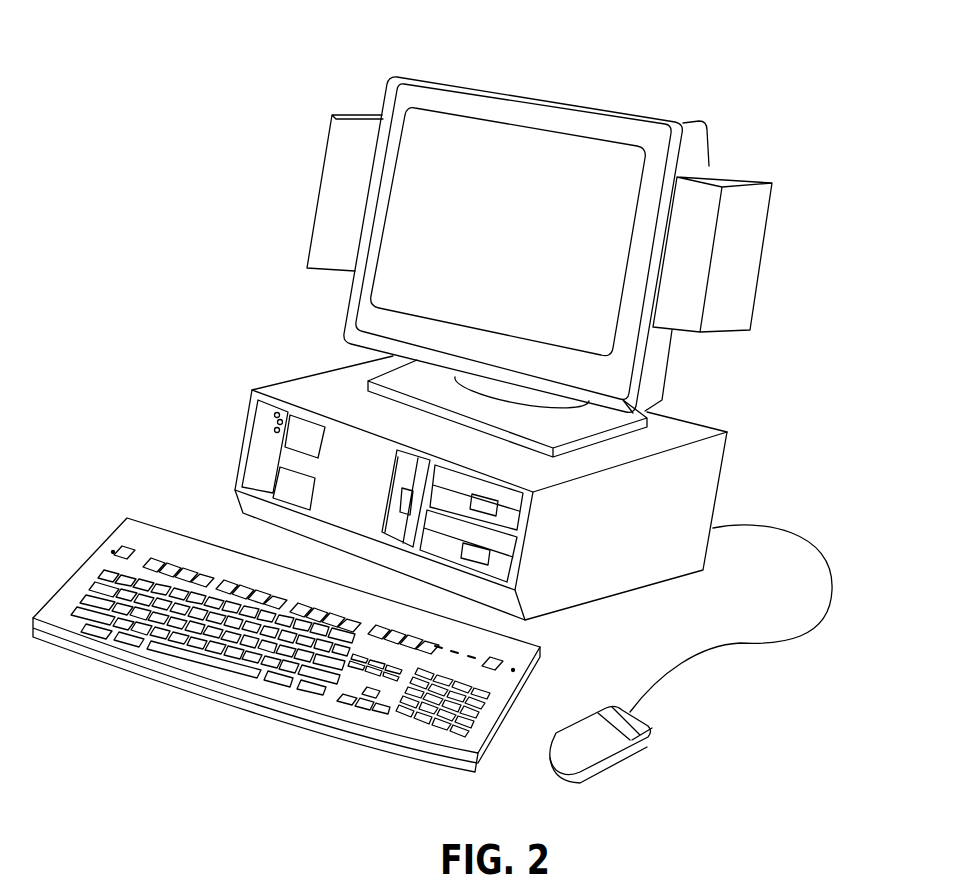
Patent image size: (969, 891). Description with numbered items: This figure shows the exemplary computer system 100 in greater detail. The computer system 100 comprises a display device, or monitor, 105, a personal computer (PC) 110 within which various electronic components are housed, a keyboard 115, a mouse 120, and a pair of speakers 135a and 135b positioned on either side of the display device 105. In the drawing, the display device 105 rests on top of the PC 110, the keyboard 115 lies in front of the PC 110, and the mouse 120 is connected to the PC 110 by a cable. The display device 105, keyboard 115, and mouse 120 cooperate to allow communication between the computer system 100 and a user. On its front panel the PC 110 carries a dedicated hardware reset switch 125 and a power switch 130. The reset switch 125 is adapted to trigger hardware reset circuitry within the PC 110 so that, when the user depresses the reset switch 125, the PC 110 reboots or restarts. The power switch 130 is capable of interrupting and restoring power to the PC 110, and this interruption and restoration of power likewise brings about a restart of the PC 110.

The computer system 100 is at (450, 397).
The display device 105 is at (465, 83).
The personal computer 110 is at (485, 476).
The keyboard 115 is at (122, 518).
The mouse 120 is at (620, 750).
The reset switch 125 is at (297, 428).
The power switch 130 is at (288, 457).
The speaker 135a is at (318, 192).
The speaker 135b is at (745, 252).